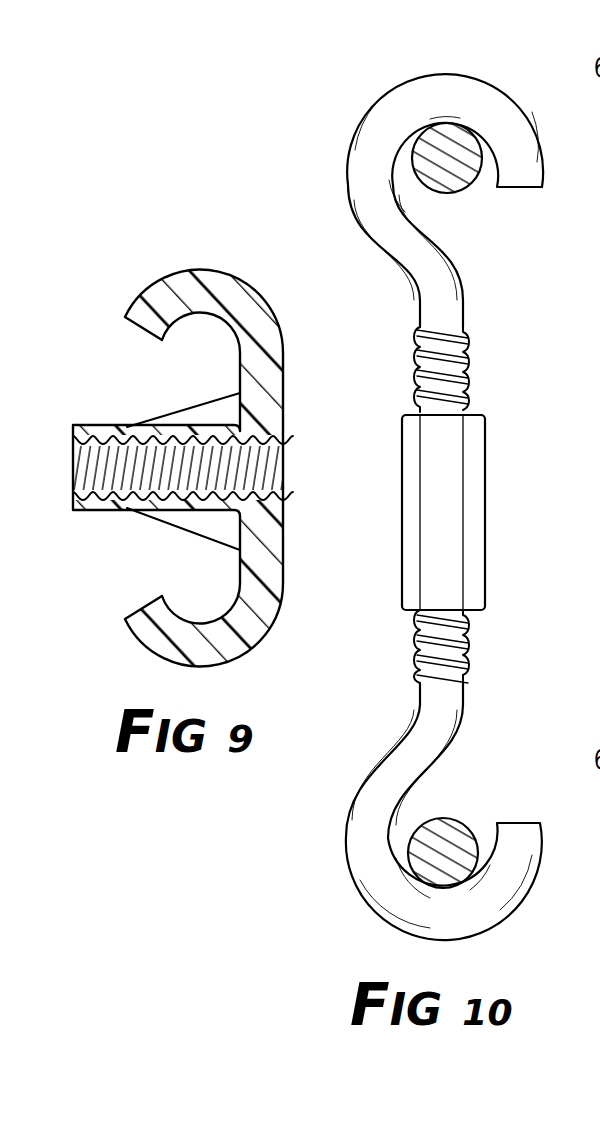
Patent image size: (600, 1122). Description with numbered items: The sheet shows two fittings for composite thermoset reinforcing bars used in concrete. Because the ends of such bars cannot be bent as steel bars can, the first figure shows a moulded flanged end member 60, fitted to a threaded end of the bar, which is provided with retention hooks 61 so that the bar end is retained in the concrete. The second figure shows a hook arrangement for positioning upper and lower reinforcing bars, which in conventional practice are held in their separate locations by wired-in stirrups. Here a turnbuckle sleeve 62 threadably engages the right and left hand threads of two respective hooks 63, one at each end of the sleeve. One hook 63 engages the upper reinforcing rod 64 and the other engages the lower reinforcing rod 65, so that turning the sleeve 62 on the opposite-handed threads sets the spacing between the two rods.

In FIG. 9, the moulded flanged end member 60 is at (176, 432).
In FIG. 9, the retention hooks 61 is at (176, 432).
In FIG. 10, the turnbuckle sleeve 62 is at (489, 512).
In FIG. 10, the hooks 63 is at (403, 496).
In FIG. 10, the upper reinforcing rod 64 is at (485, 196).
In FIG. 10, the lower reinforcing rod 65 is at (473, 815).